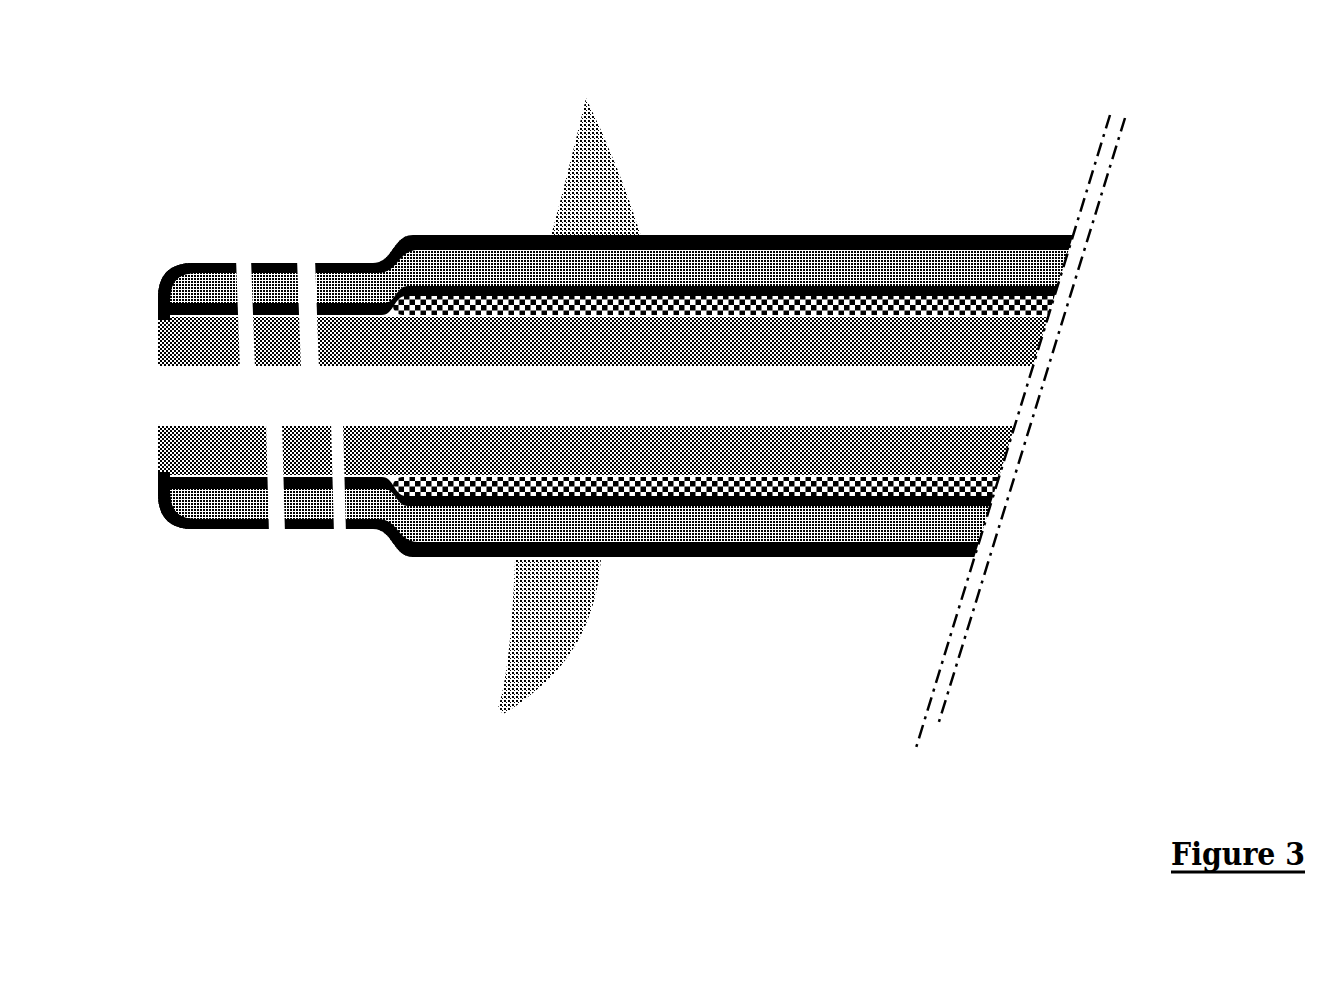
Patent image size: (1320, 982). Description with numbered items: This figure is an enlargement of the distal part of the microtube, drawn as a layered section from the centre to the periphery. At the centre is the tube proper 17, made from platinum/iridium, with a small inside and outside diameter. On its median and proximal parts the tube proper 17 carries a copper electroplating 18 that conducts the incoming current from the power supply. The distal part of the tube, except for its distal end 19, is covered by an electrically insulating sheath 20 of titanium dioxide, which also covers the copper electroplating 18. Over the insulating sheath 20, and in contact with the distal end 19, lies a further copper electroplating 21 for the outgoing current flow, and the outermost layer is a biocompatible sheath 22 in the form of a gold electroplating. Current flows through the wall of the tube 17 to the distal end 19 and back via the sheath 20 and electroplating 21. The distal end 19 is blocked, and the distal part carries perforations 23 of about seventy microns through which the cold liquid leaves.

The tube proper 17 is at (780, 277).
The copper electroplating 18 is at (995, 270).
The distal end 19 is at (150, 307).
The electrically insulating sheath 20 is at (337, 307).
The copper electroplating for outgoing current flow 21 is at (633, 228).
The biocompatible sheath 22 is at (905, 228).
The perforations 23 is at (267, 502).